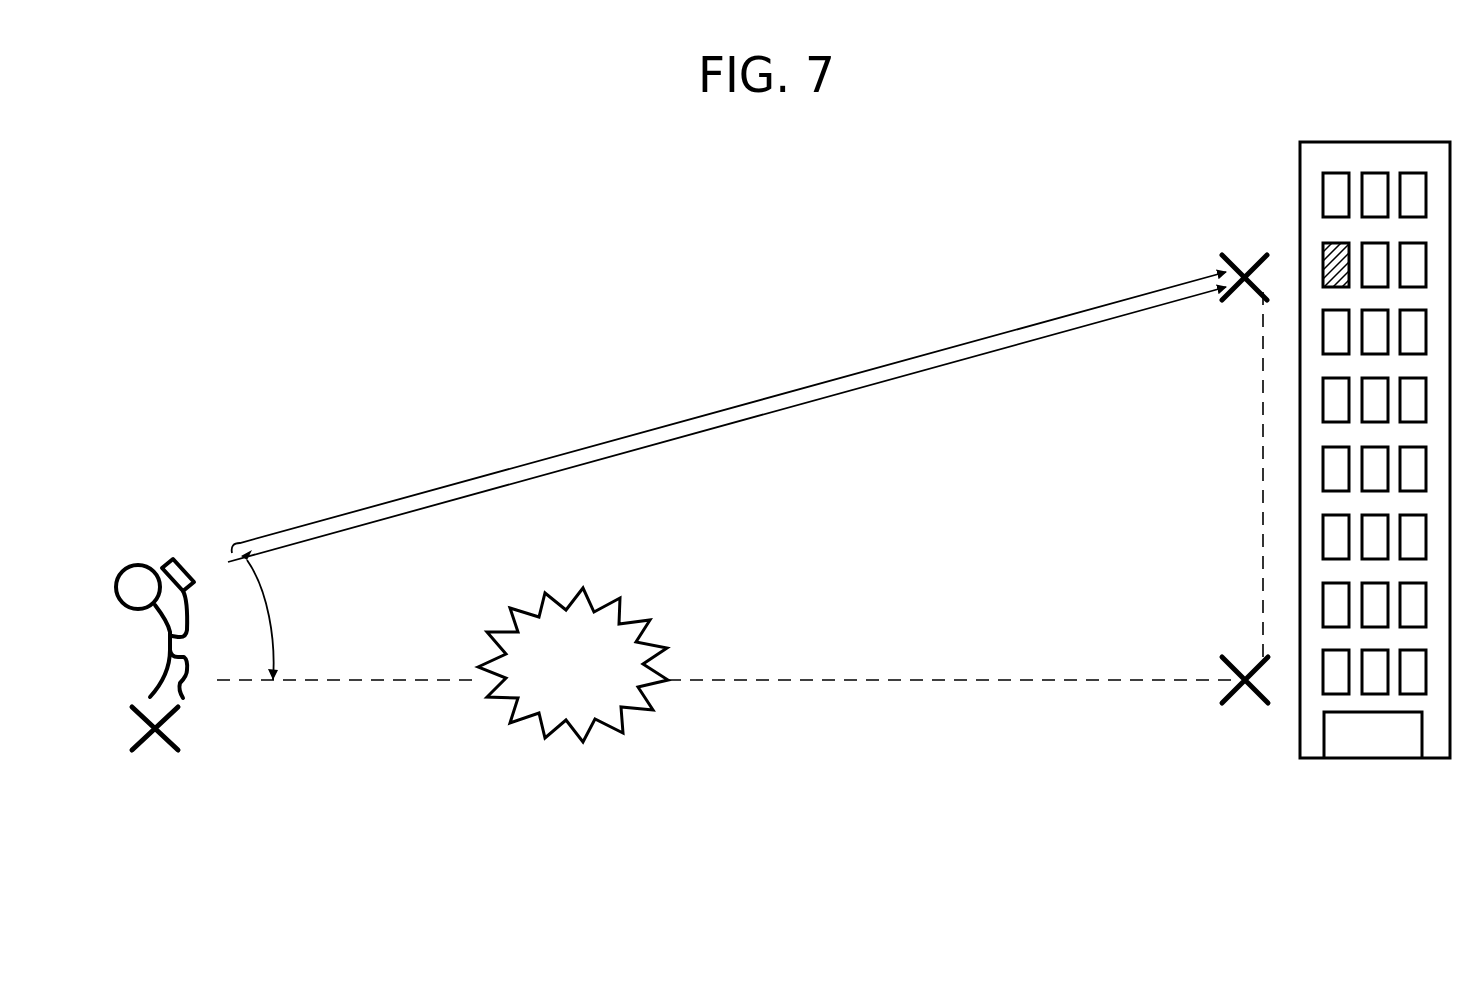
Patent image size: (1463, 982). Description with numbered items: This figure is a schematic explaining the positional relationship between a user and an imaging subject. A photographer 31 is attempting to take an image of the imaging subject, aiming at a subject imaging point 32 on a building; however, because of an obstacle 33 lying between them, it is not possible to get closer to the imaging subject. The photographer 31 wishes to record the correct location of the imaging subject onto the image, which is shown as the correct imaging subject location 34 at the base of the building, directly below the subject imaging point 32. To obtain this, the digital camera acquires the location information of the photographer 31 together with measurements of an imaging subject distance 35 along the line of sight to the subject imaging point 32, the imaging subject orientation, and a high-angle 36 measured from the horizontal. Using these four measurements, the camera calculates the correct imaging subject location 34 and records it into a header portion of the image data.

The photographer 31 is at (125, 565).
The subject imaging point 32 is at (1263, 235).
The obstacle 33 is at (657, 640).
The correct imaging subject location 34 is at (1225, 700).
The imaging subject distance 35 is at (757, 400).
The high-angle 36 is at (275, 612).